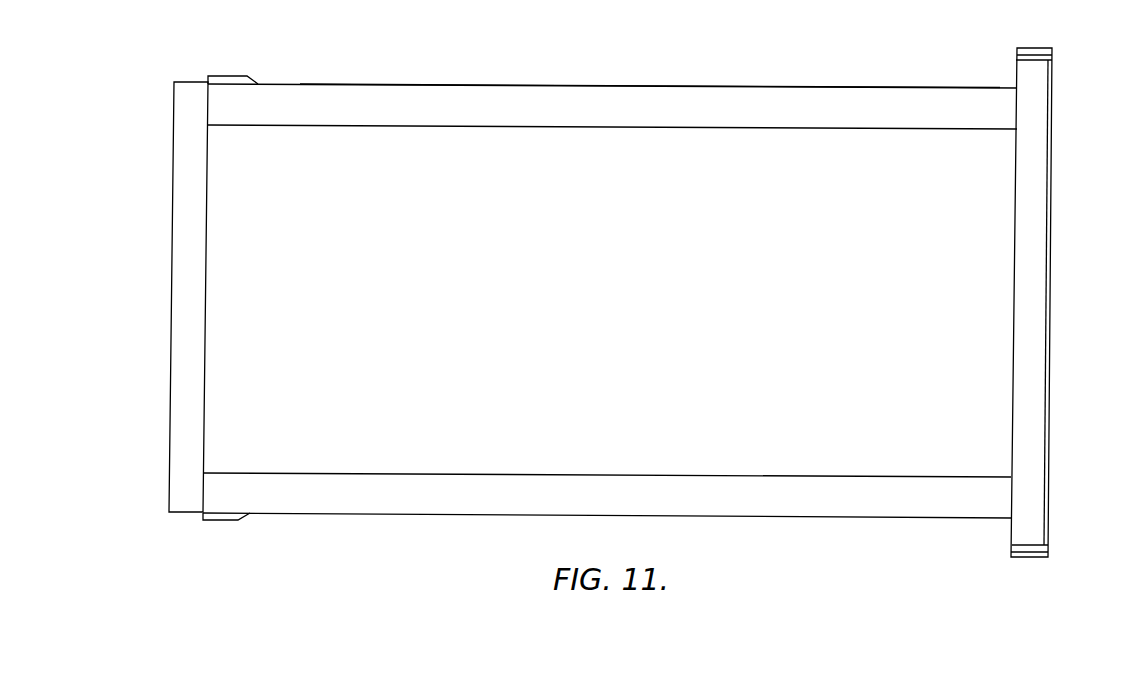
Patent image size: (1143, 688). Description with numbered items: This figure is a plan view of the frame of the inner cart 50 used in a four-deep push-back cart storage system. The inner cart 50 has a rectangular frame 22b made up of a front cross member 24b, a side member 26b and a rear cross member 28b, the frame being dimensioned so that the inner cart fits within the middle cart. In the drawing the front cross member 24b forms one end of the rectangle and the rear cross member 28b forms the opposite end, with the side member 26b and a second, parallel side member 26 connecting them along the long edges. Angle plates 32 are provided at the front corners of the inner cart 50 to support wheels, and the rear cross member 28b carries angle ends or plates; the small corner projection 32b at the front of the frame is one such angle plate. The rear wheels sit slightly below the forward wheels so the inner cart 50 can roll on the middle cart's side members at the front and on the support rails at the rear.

The rectangular frame 22b is at (437, 82).
The front cross member 24b is at (188, 416).
The bottom rail 26 is at (447, 493).
The side member 26b is at (678, 103).
The rear cross member 28b is at (1035, 182).
The angle plates 32 is at (225, 74).
The bottom tab 32b is at (218, 522).
The inner cart 50 is at (171, 210).